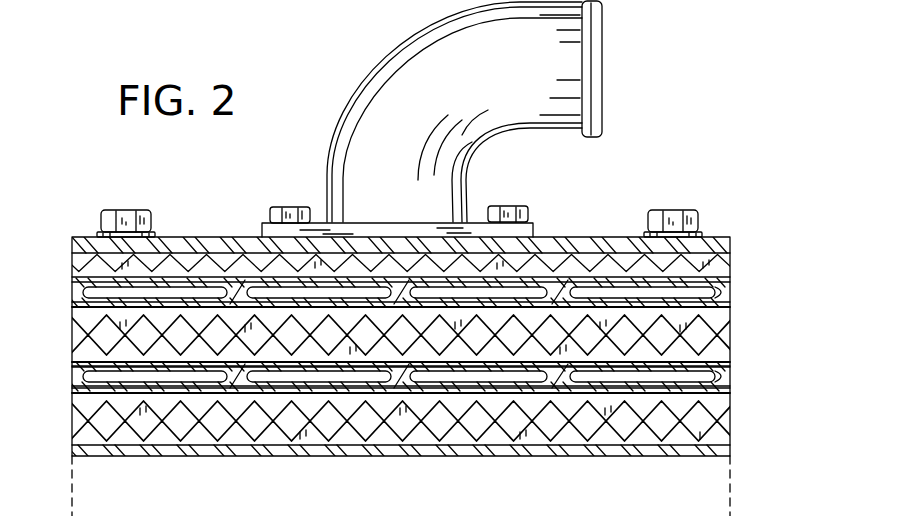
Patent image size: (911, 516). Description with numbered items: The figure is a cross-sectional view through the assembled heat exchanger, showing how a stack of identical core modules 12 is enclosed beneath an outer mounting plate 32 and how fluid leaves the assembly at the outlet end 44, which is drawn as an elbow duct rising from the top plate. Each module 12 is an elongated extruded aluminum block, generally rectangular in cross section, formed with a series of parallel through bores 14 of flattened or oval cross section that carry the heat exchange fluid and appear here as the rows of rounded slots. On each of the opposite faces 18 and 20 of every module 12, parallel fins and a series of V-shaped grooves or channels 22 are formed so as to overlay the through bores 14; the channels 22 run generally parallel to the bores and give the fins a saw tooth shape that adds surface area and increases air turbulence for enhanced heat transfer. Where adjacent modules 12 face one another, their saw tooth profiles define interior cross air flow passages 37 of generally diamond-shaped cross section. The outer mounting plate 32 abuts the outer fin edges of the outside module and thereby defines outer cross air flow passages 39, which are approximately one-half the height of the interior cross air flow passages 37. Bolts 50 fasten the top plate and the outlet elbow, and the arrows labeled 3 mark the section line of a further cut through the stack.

The section line 3 is at (72, 308).
The core module 12 is at (718, 320).
The through bore 14 is at (262, 291).
The face of module 18 is at (728, 244).
The face of module 20 is at (733, 352).
The V-shaped channel 22 is at (700, 428).
The outer mounting plate 32 is at (176, 248).
The interior cross air flow passage 37 is at (622, 332).
The outer cross air flow passage 39 is at (108, 262).
The outlet end 44 is at (600, 76).
The mounting bolt 50 is at (301, 207).